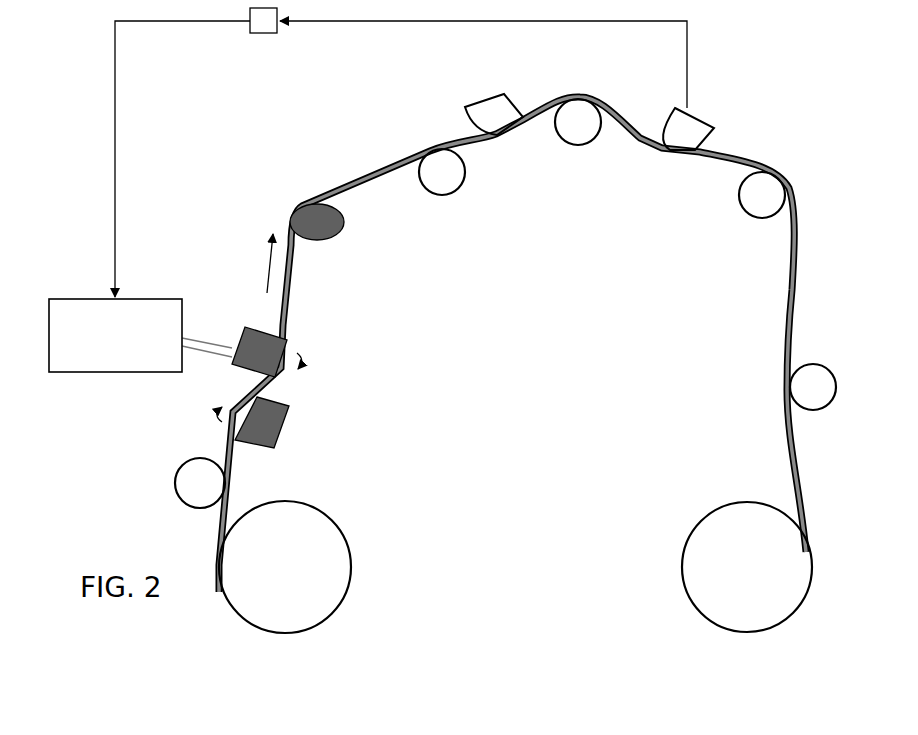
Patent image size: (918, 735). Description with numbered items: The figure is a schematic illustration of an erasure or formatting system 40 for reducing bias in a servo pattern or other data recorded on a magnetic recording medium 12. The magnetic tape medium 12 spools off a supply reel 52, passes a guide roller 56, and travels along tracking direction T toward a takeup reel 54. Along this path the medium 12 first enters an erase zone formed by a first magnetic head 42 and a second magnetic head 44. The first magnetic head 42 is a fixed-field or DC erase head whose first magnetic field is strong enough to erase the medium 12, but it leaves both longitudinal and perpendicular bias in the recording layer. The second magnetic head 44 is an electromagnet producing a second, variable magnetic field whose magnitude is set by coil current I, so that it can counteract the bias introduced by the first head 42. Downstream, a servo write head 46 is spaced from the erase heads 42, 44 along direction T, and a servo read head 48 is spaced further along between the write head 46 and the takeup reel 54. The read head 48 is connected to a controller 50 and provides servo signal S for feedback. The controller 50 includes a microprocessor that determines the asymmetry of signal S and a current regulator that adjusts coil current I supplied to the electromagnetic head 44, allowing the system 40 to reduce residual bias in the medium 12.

The erasure system 40 is at (84, 74).
The magnetic recording medium 12 is at (362, 190).
The first magnetic head 42 is at (265, 445).
The second magnetic head 44 is at (247, 325).
The servo write head 46 is at (479, 93).
The servo read head 48 is at (694, 107).
The controller 50 is at (75, 298).
The supply reel 52 is at (347, 533).
The takeup reel 54 is at (705, 517).
The guide roller 56 is at (322, 242).